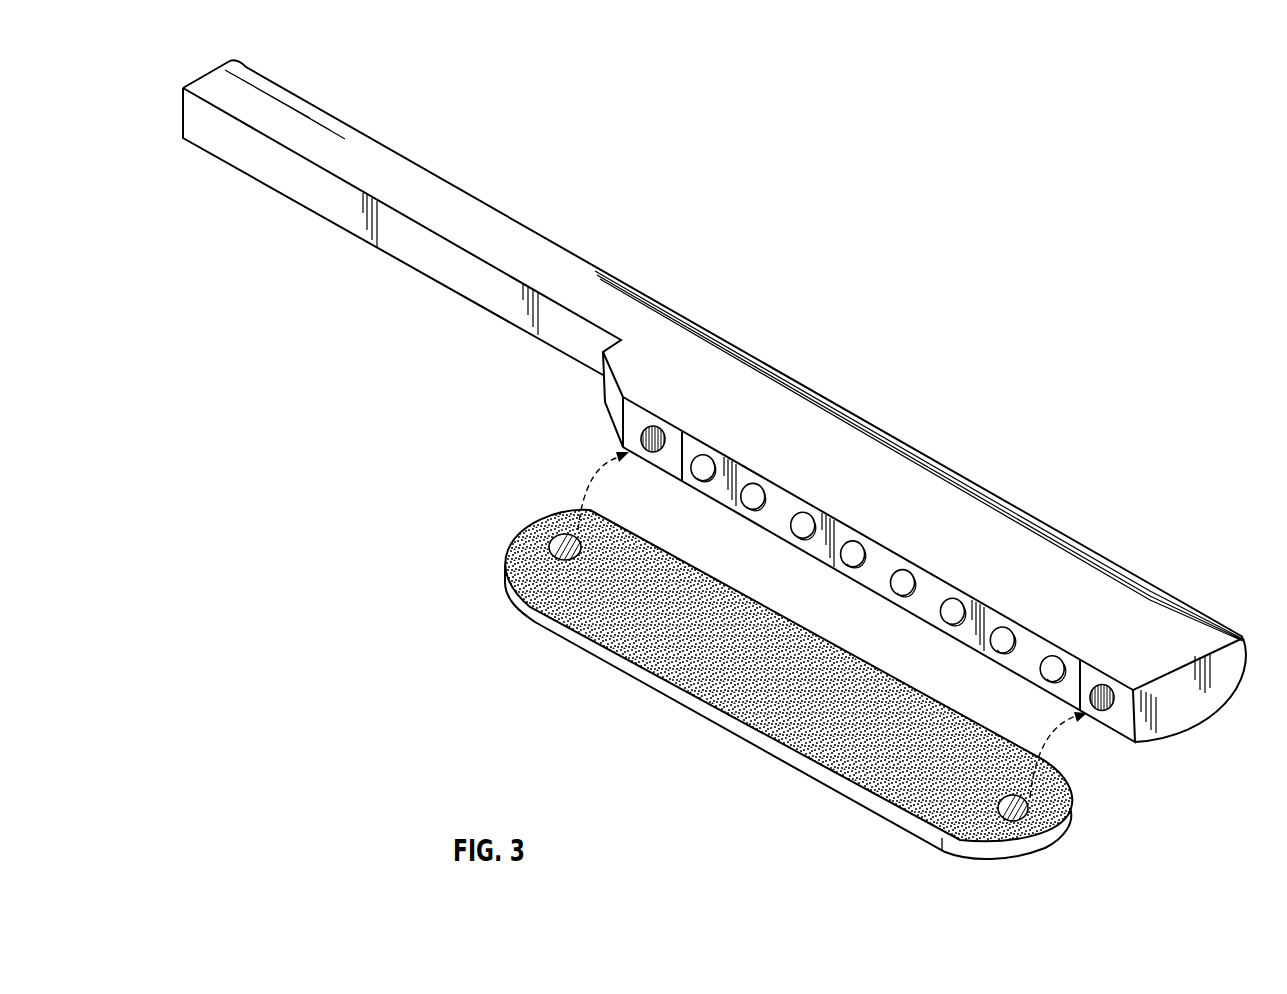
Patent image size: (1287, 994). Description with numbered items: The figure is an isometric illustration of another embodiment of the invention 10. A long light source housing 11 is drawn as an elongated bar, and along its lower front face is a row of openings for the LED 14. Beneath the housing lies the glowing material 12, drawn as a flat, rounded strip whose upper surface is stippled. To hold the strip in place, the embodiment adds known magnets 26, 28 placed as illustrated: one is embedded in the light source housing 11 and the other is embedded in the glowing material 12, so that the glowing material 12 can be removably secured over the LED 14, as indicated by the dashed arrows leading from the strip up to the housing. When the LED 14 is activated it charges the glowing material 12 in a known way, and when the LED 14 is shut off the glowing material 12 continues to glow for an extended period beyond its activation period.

The invention 10 is at (714, 401).
The light source housing 11 is at (843, 483).
The glowing material 12 is at (762, 652).
The LED 14 is at (899, 580).
The magnet 26 is at (1092, 688).
The magnet 28 is at (1055, 835).